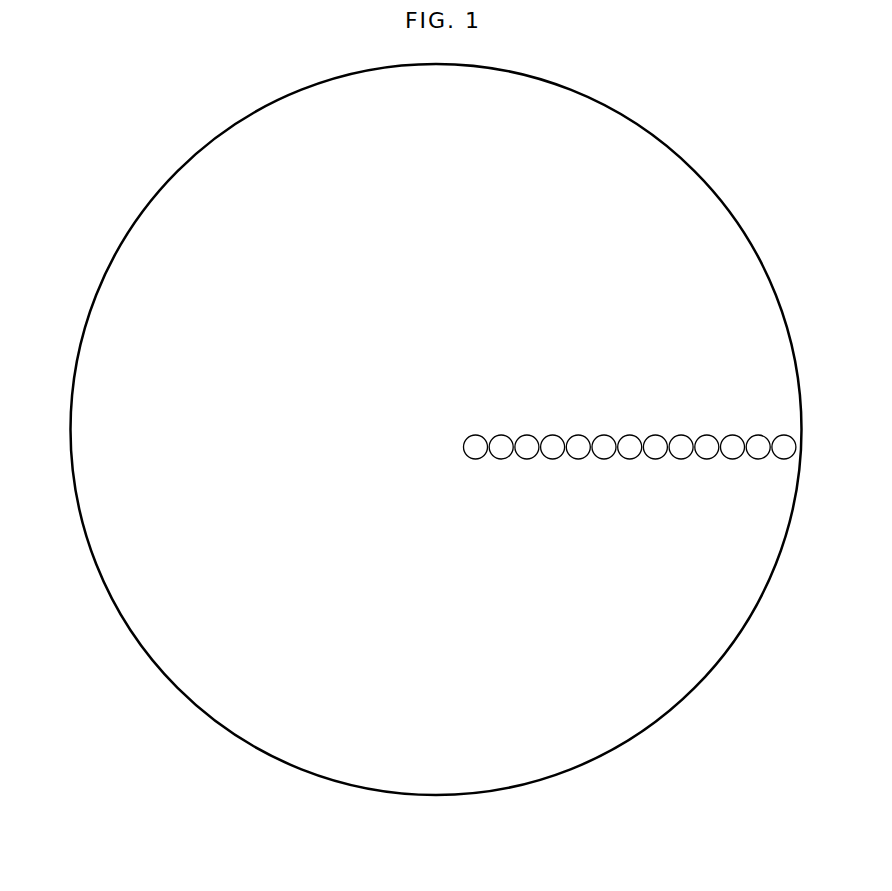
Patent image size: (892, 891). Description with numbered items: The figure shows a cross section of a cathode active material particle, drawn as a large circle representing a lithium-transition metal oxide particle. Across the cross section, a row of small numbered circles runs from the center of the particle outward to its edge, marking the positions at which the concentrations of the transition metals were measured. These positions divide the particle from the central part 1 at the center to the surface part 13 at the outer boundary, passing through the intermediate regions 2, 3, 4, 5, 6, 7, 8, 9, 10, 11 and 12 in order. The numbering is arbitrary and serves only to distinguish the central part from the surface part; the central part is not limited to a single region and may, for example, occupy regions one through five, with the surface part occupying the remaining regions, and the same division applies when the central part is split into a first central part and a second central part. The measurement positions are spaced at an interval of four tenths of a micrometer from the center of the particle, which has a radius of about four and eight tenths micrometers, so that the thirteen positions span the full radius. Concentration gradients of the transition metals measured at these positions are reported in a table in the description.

The central part 1 is at (476, 447).
The region 2 is at (501, 447).
The region 3 is at (527, 447).
The region 4 is at (553, 447).
The region 5 is at (578, 447).
The region 6 is at (604, 447).
The region 7 is at (630, 447).
The region 8 is at (655, 447).
The region 9 is at (681, 447).
The region 10 is at (707, 447).
The region 11 is at (733, 447).
The region 12 is at (758, 447).
The surface part 13 is at (784, 447).